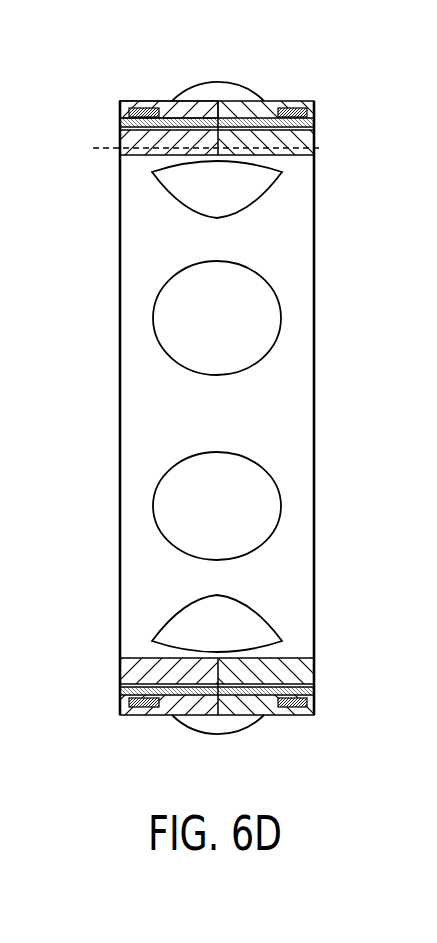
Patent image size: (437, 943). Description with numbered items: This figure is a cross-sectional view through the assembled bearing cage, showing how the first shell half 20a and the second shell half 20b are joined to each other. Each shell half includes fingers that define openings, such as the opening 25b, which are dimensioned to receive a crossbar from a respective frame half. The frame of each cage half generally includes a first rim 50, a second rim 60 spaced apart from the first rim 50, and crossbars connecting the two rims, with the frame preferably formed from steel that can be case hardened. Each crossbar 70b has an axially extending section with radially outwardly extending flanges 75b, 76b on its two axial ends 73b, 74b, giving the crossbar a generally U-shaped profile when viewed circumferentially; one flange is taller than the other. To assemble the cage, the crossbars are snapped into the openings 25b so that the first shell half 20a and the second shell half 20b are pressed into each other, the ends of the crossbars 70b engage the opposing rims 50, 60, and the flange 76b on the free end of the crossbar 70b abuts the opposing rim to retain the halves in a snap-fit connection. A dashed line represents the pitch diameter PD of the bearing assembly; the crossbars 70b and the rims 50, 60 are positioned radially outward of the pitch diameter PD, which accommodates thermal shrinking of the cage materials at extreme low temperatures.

The first shell half 20a is at (97, 121).
The second shell half 20b is at (339, 148).
The opening 25b is at (146, 130).
The first rim 50 is at (149, 106).
The second rim 60 is at (314, 108).
The crossbar 70b is at (178, 690).
The axial end 73b is at (316, 700).
The axial end 74b is at (121, 704).
The radially outwardly extending flange 75b is at (308, 110).
The radially outwardly extending flange 76b is at (122, 103).
The pitch diameter PD is at (113, 149).